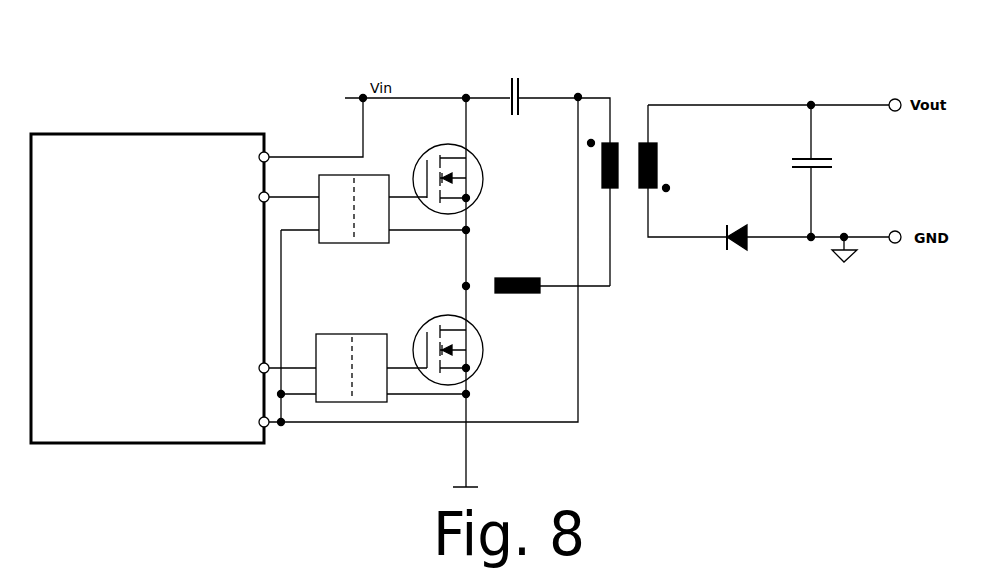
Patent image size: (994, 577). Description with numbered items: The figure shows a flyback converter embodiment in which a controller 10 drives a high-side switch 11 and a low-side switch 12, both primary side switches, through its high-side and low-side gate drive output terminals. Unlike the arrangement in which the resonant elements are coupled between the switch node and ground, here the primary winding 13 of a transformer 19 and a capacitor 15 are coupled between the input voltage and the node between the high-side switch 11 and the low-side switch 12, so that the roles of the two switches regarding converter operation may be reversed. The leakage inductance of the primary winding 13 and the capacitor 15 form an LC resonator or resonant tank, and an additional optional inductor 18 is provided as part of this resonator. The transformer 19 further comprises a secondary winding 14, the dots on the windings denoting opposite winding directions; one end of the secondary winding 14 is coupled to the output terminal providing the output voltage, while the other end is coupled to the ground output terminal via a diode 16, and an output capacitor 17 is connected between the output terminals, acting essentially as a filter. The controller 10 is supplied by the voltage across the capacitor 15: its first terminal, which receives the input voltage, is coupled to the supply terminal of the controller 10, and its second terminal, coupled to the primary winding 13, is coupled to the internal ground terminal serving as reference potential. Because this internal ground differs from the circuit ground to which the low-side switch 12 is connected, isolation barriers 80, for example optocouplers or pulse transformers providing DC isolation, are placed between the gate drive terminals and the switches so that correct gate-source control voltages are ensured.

The controller 10 is at (131, 134).
The high-side switch 11 is at (483, 187).
The low-side switch 12 is at (482, 358).
The primary winding 13 is at (602, 175).
The secondary winding 14 is at (657, 161).
The capacitor 15 is at (520, 88).
The diode 16 is at (738, 225).
The output capacitor 17 is at (820, 155).
The inductor 18 is at (518, 277).
The transformer 19 is at (625, 99).
The isolation barrier 80 is at (374, 288).